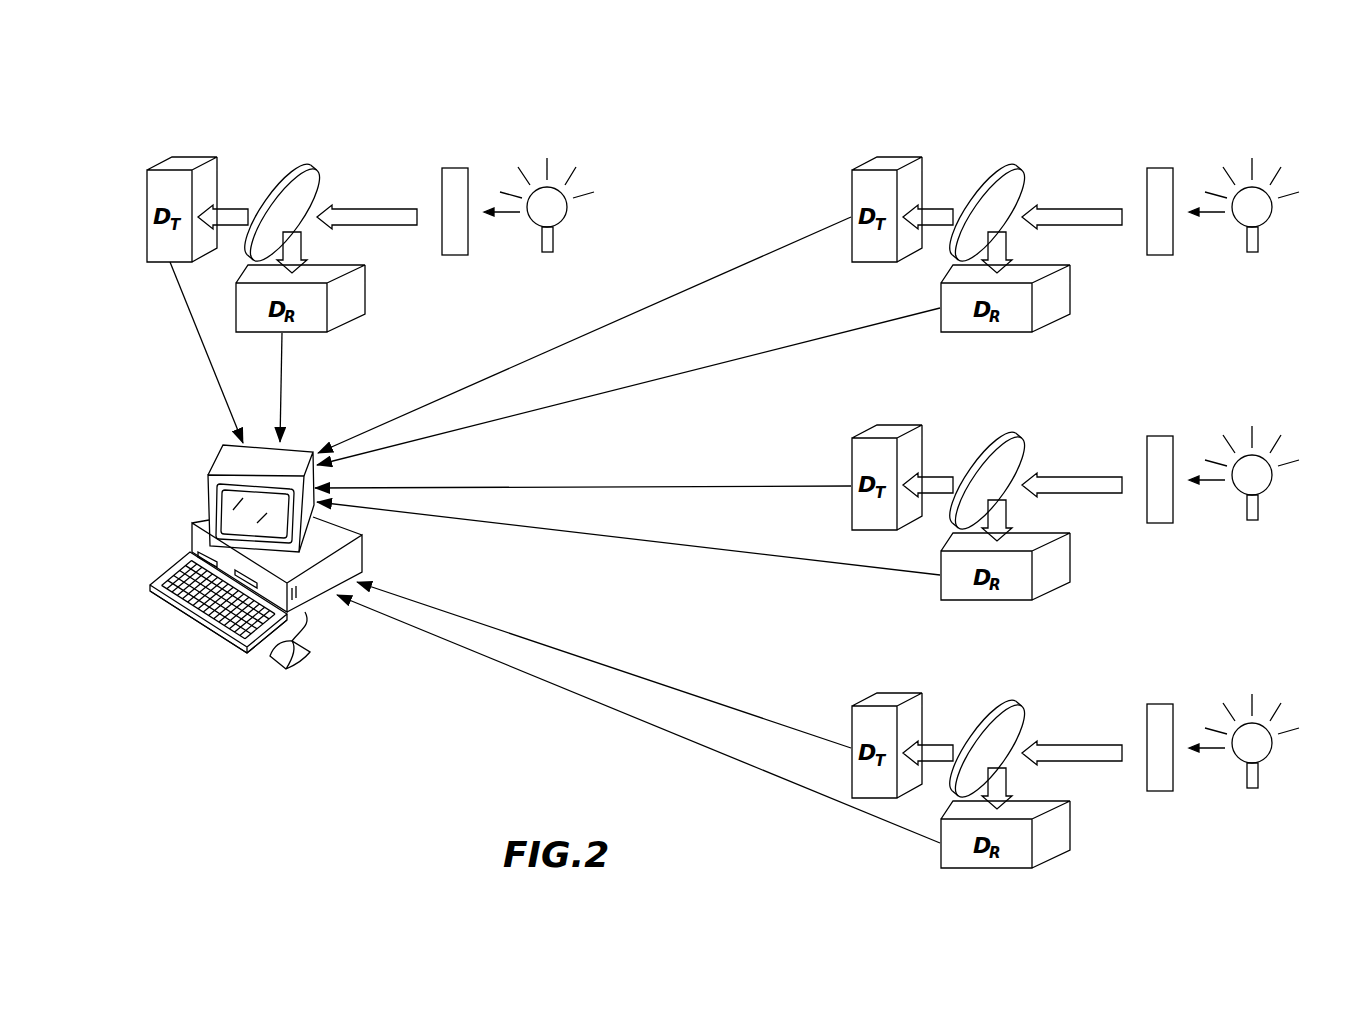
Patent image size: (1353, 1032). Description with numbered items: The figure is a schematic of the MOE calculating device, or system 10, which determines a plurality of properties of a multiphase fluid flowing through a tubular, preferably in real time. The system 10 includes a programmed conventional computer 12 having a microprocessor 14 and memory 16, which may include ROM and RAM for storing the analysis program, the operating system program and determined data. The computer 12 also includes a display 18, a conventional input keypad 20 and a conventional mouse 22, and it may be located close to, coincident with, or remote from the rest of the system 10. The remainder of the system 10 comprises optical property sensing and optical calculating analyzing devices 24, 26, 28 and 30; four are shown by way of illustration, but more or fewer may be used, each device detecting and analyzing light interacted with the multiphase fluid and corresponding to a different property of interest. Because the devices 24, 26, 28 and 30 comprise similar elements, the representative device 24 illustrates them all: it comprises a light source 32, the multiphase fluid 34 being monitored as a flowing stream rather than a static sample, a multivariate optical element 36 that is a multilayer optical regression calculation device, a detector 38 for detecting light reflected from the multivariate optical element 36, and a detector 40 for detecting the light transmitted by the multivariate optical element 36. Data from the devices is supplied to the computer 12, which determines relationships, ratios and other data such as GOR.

The MOE calculating device 10 is at (1255, 120).
The computer 12 is at (229, 542).
The microprocessor 14 is at (194, 545).
The memory 16 is at (187, 608).
The display 18 is at (230, 517).
The input keypad 20 is at (228, 638).
The mouse 22 is at (298, 656).
The optical property sensing and optical calculating analyzing device 24 is at (395, 207).
The optical property sensing and optical calculating analyzing device 26 is at (1068, 168).
The optical property sensing and optical calculating analyzing device 28 is at (1068, 436).
The optical property sensing and optical calculating analyzing device 30 is at (1068, 704).
The light source 32 is at (567, 218).
The multiphase fluid 34 is at (460, 167).
The multivariate optical element 36 is at (273, 182).
The detector 38 is at (366, 290).
The detector 40 is at (173, 167).